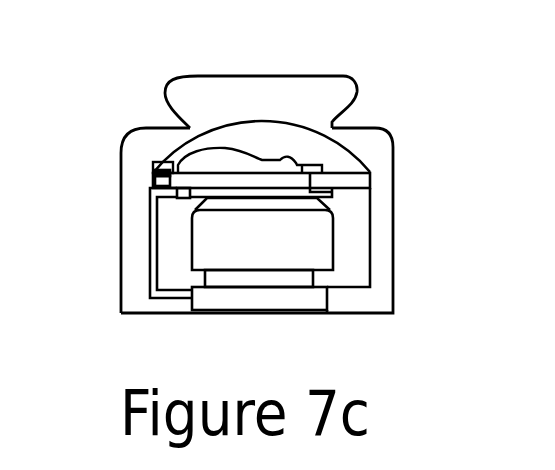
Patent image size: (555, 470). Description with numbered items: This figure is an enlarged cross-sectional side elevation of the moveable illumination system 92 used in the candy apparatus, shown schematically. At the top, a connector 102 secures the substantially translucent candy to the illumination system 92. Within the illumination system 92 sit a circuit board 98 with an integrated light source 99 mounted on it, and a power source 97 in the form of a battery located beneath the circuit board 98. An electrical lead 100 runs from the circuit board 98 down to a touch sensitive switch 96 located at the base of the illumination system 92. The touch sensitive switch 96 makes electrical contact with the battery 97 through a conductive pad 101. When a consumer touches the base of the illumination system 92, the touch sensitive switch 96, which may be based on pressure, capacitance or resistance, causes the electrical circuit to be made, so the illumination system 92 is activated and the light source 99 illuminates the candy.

The moveable illumination system 92 is at (392, 125).
The connector 102 is at (270, 100).
The circuit board 98 is at (340, 183).
The integrated light source 99 is at (253, 165).
The electrical lead 100 is at (152, 250).
The power source 97 is at (280, 255).
The conductive pad 101 is at (310, 278).
The touch sensitive switch 96 is at (307, 305).